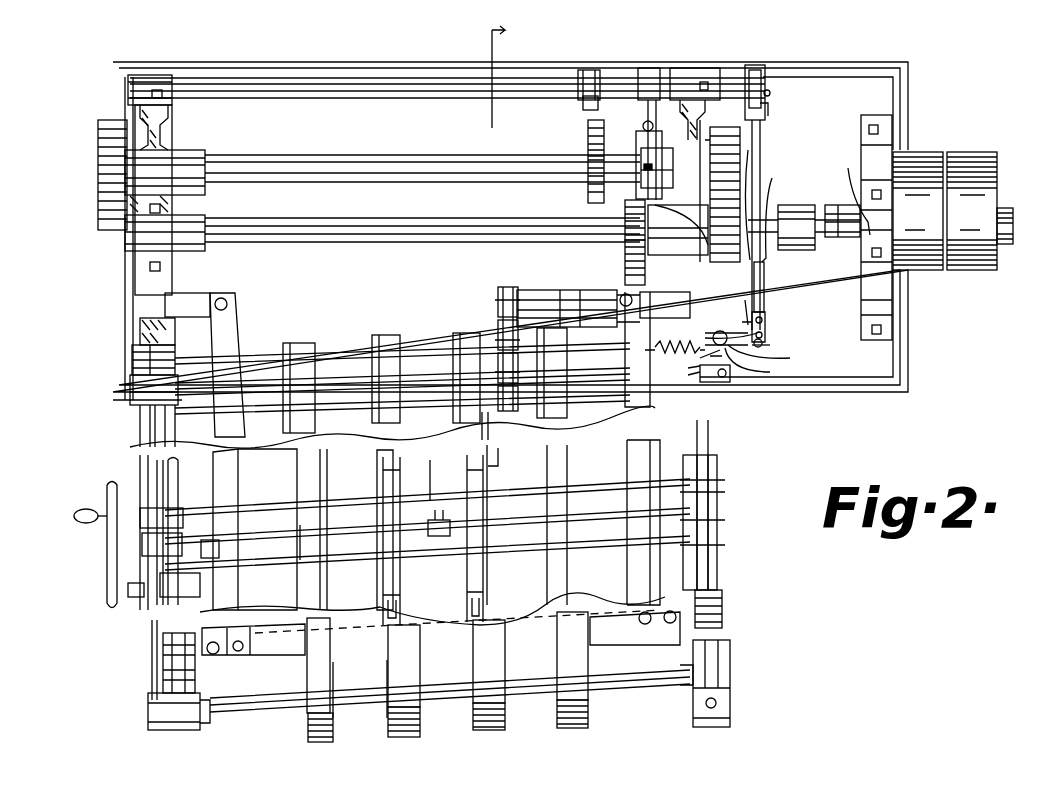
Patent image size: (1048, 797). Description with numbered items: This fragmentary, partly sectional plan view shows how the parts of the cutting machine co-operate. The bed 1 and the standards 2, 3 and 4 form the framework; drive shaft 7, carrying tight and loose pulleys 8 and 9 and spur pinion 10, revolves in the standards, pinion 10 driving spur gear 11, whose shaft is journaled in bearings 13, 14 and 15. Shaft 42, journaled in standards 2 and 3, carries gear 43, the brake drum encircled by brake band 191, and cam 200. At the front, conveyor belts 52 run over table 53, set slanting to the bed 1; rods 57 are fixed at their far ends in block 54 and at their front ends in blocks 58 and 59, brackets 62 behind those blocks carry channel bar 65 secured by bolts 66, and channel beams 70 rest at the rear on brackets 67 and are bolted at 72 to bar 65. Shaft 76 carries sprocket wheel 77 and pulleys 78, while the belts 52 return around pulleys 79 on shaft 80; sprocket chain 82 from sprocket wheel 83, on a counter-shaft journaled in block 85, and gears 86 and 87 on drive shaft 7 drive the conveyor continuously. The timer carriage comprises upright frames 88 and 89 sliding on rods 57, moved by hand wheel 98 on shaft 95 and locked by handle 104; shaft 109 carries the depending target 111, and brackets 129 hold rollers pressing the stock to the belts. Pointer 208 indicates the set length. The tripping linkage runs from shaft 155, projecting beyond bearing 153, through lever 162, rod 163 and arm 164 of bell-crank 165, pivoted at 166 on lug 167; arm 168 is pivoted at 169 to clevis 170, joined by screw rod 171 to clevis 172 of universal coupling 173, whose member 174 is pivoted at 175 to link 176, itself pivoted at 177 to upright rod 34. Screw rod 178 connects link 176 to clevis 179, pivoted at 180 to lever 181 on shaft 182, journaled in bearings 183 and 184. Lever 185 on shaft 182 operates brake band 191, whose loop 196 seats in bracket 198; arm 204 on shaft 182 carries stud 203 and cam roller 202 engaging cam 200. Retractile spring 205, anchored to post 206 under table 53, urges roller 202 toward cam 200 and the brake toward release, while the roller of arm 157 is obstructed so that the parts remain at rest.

The bed 1 is at (336, 66).
The standard 2 is at (145, 282).
The standard 3 is at (707, 128).
The standard 4 is at (856, 150).
The drive shaft 7 is at (405, 243).
The tight pulley 8 is at (970, 165).
The loose pulley 9 is at (922, 165).
The spur pinion 10 is at (793, 206).
The spur gear 11 is at (833, 206).
The bearing 13 is at (509, 253).
The bearing 14 is at (625, 253).
The bearing 15 is at (845, 191).
The upright rod (detent) 34 is at (779, 209).
The shaft 42 is at (388, 176).
The gear 43 is at (98, 150).
The conveyor belts 52 is at (322, 669).
The conveyor table 53 is at (390, 527).
The block 54 is at (150, 345).
The rods 57 is at (160, 430).
The block 58 is at (160, 715).
The block 59 is at (732, 672).
The brackets 62 is at (163, 660).
The channel bar 65 is at (236, 652).
The bolts 66 is at (214, 655).
The brackets 67 is at (427, 305).
The channel beams 70 is at (238, 318).
The bolts 72 is at (255, 642).
The revoluble shaft 76 is at (247, 392).
The sprocket wheel 77 is at (490, 440).
The pulleys 78 is at (376, 346).
The pulleys 79 is at (336, 727).
The revoluble shaft 80 is at (260, 710).
The sprocket chain 82 is at (497, 310).
The sprocket wheel 83 is at (500, 287).
The block 85 is at (574, 283).
The gear 86 is at (622, 296).
The gear 87 is at (625, 213).
The upright frame 88 is at (720, 486).
The upright frame 89 is at (145, 500).
The shaft 95 is at (145, 550).
The hand wheel 98 is at (107, 492).
The handle 104 is at (128, 588).
The shaft 109 is at (325, 540).
The depending frame or target 111 is at (438, 538).
The brackets 129 is at (368, 510).
The bearing 153 is at (147, 398).
The shaft 155 is at (140, 425).
The arm 157 is at (140, 538).
The lever 162 is at (135, 352).
The rod 163 is at (264, 356).
The bell-crank arm 164 is at (735, 380).
The bell-crank 165 is at (732, 370).
The pivot 166 is at (772, 372).
The lug 167 is at (725, 330).
The bell-crank arm 168 is at (792, 357).
The pivot 169 is at (763, 345).
The clevis 170 is at (775, 330).
The screw rod 171 is at (770, 330).
The clevis 172 is at (768, 318).
The universal coupling 173 is at (772, 302).
The coupling member 174 is at (770, 285).
The pivot 175 is at (747, 300).
The link 176 is at (756, 162).
The pivot 177 is at (768, 272).
The screw rod 178 is at (762, 140).
The clevis 179 is at (766, 112).
The pivot 180 is at (771, 93).
The lever 181 is at (754, 65).
The shaft 182 is at (441, 85).
The bearing 183 is at (692, 68).
The bearing 184 is at (153, 78).
The lever 185 is at (650, 70).
The brake band 191 is at (640, 132).
The loop 196 is at (657, 168).
The bracket 198 is at (657, 178).
The cam 200 is at (588, 196).
The cam roller 202 is at (587, 120).
The stud 203 is at (582, 102).
The arm 204 is at (592, 72).
The retractile spring 205 is at (712, 382).
The post 206 is at (640, 405).
The pointer 208 is at (232, 550).